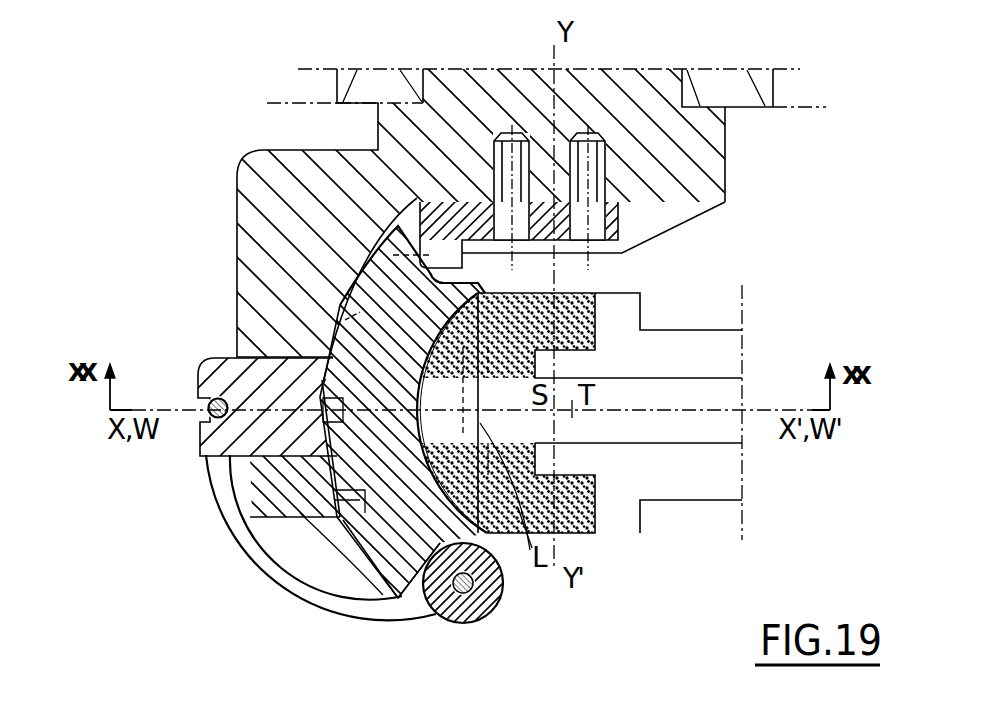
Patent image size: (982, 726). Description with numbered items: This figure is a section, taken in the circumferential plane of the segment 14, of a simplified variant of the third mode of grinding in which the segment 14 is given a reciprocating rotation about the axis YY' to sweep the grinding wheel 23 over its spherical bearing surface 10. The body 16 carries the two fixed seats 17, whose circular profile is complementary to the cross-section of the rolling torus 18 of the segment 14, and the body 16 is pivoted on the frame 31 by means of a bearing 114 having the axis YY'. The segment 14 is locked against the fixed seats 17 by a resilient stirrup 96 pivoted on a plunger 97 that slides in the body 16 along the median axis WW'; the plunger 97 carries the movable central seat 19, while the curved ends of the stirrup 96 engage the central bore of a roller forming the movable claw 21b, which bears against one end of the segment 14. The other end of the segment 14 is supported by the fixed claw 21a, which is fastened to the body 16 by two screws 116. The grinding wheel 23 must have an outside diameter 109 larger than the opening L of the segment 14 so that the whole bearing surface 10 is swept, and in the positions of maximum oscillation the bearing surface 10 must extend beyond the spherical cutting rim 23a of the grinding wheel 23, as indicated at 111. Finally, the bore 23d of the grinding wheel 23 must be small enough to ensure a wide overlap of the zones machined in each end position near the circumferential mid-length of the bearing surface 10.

The body 16 is at (257, 200).
The frame 31 is at (291, 105).
The bearing 114 is at (376, 88).
The fixed claw 21a is at (447, 192).
The extension of bearing surface beyond cutting rim 111 is at (490, 290).
The screws 116 is at (590, 130).
The fixed seats 17 is at (338, 307).
The segment 14 is at (310, 356).
The plunger 97 is at (197, 380).
The movable central seat 19 is at (328, 412).
The rolling torus 18 is at (320, 462).
The resilient stirrup 96 is at (312, 605).
The spherical bearing surface 10 is at (352, 590).
The bore of the grinding wheel 23d is at (400, 598).
The movable claw 21b is at (475, 624).
The spherical cutting rim 23a is at (487, 353).
The grinding wheel 23 is at (583, 517).
The outside diameter 109 is at (515, 537).